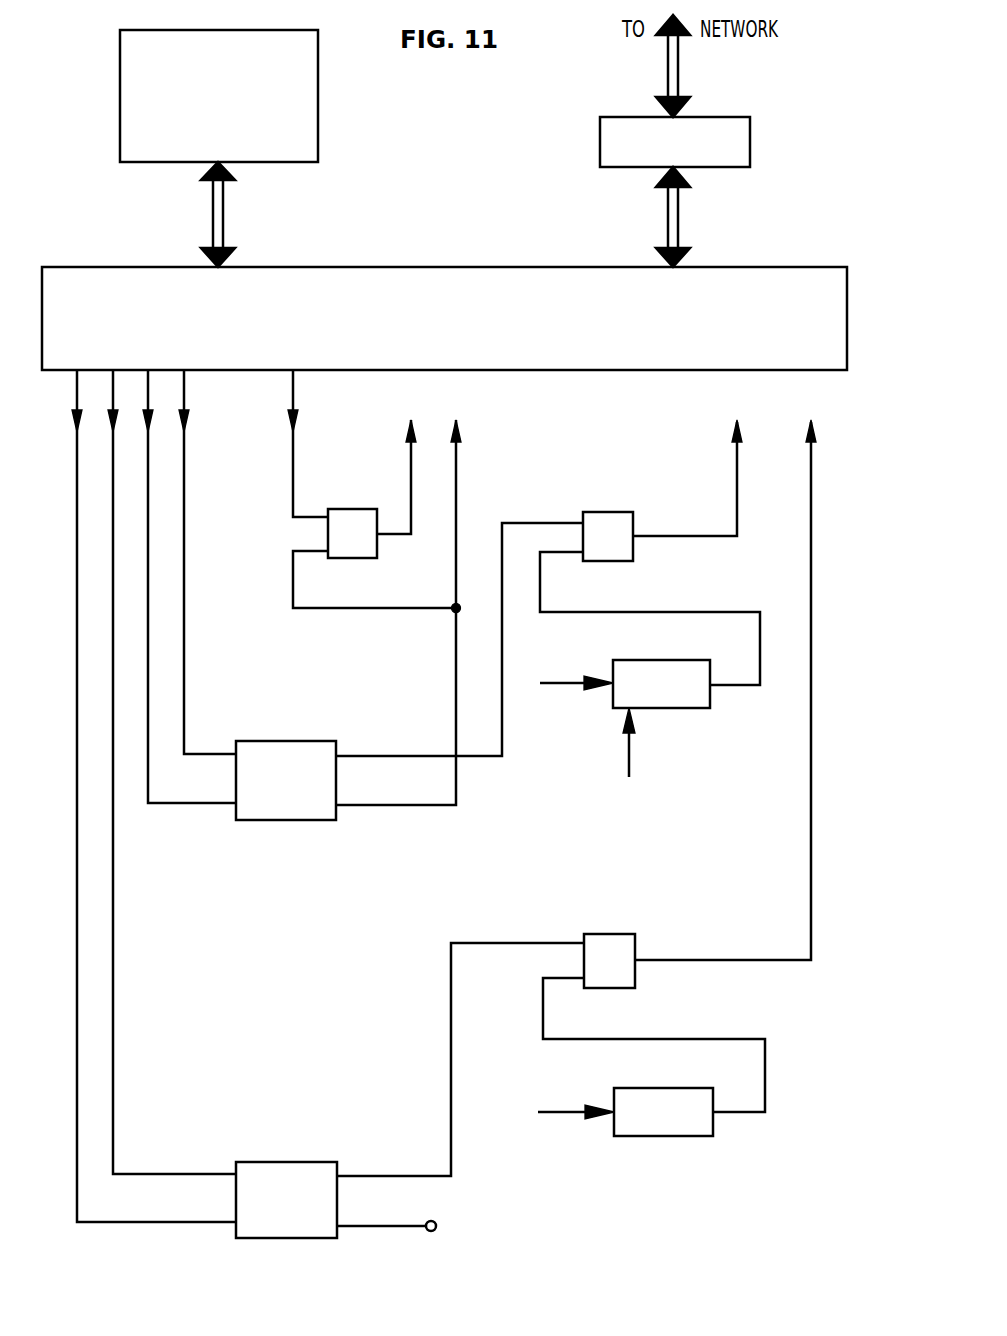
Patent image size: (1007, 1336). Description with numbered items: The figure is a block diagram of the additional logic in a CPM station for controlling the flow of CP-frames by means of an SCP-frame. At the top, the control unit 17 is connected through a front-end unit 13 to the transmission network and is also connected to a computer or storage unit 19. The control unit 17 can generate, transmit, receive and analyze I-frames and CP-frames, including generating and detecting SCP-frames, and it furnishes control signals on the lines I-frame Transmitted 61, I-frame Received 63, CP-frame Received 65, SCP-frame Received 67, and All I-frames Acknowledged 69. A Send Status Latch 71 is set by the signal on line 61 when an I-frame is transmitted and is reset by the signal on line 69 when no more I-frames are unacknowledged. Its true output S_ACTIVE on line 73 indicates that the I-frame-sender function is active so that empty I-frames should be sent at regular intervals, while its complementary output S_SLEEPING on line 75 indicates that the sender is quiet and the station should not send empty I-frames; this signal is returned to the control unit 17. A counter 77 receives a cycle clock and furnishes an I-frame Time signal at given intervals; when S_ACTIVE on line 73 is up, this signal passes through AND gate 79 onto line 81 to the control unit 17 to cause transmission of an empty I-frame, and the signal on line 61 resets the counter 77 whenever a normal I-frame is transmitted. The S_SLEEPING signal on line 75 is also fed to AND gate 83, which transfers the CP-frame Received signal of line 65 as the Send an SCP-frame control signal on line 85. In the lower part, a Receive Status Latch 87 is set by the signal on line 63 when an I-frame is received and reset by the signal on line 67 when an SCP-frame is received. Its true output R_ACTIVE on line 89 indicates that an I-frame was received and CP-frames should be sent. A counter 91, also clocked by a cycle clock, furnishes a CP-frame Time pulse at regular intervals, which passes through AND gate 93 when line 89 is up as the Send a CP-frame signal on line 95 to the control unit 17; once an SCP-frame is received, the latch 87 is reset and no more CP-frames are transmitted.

The front-end unit 13 is at (718, 117).
The control unit 17 is at (450, 267).
The computer or storage unit 19 is at (319, 93).
The I-frame Transmitted line 61 is at (184, 395).
The I-frame Received line 63 is at (113, 930).
The CP-frame Received line 65 is at (292, 479).
The SCP-frame Received line 67 is at (77, 933).
The All I-frames Acknowledged line 69 is at (162, 803).
The Send Status Latch 71 is at (290, 820).
The S_ACTIVE line 73 is at (502, 768).
The S_SLEEPING line 75 is at (455, 636).
The counter 77 is at (710, 700).
The AND gate 79 is at (609, 561).
The Send an I-frame line 81 is at (737, 472).
The AND gate 83 is at (350, 558).
The Send an SCP-frame line 85 is at (402, 537).
The Receive Status Latch 87 is at (283, 1238).
The R_ACTIVE line 89 is at (451, 1152).
The counter 91 is at (662, 1136).
The AND gate 93 is at (604, 913).
The Send a CP-frame line 95 is at (811, 916).